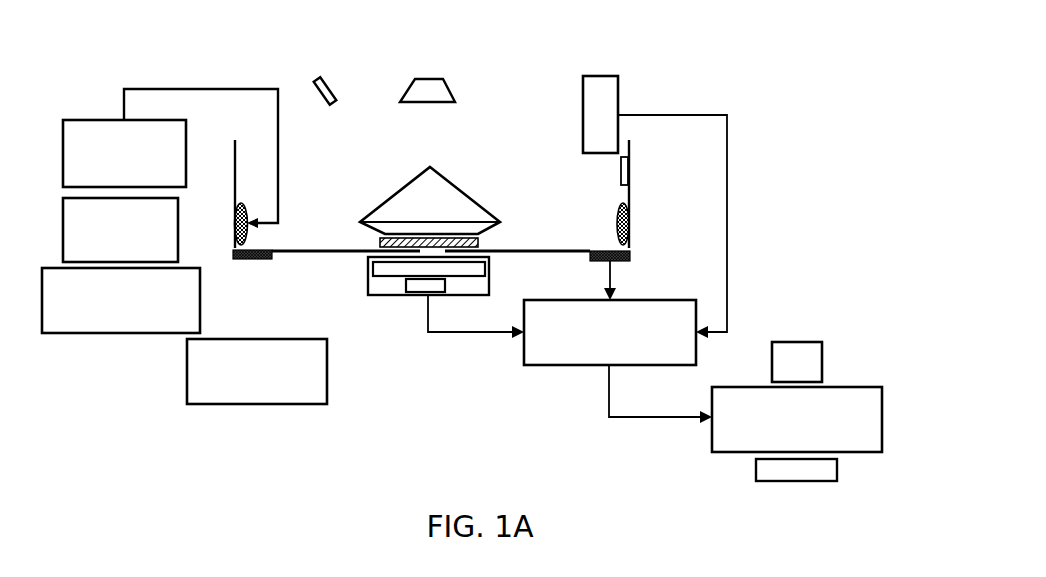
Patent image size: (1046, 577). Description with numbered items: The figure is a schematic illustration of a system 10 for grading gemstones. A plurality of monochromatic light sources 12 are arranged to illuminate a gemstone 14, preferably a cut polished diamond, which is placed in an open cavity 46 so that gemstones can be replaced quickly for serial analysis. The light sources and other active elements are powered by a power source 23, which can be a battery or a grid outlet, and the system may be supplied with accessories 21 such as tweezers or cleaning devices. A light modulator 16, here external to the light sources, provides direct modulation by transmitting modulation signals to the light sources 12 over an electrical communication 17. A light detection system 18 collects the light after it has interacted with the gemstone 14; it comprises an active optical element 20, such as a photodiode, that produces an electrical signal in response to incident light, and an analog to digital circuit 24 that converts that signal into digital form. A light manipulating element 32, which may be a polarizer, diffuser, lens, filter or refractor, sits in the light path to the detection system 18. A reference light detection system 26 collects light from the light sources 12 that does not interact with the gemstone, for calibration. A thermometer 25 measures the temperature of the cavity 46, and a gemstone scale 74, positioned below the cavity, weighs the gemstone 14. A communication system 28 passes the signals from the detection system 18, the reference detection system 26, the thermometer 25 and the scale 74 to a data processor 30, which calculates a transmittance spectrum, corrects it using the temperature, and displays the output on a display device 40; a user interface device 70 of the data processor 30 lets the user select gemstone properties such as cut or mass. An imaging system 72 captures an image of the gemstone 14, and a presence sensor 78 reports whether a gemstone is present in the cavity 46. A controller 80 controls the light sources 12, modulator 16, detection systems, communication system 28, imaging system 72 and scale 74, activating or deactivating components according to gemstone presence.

The system for grading gemstones 10 is at (180, 58).
The monochromatic light source 12 is at (243, 204).
The gemstone 14 is at (413, 190).
The light modulator 16 is at (124, 153).
The communication 17 is at (222, 89).
The light detection system 18 is at (366, 289).
The active optical element 20 is at (376, 264).
The accessories 21 is at (257, 371).
The power source 23 is at (121, 300).
The analog to digital circuit 24 is at (408, 287).
The thermometer 25 is at (631, 167).
The reference light detection system 26 is at (589, 117).
The communication system 28 is at (618, 342).
The data processor 30 is at (797, 419).
The light manipulating element 32 is at (485, 243).
The display device 40 is at (786, 374).
The cavity 46 is at (232, 185).
The user interface device 70 is at (816, 471).
The imaging system 72 is at (436, 80).
The gemstone scale 74 is at (235, 258).
The presence sensor 78 is at (328, 81).
The controller 80 is at (120, 230).